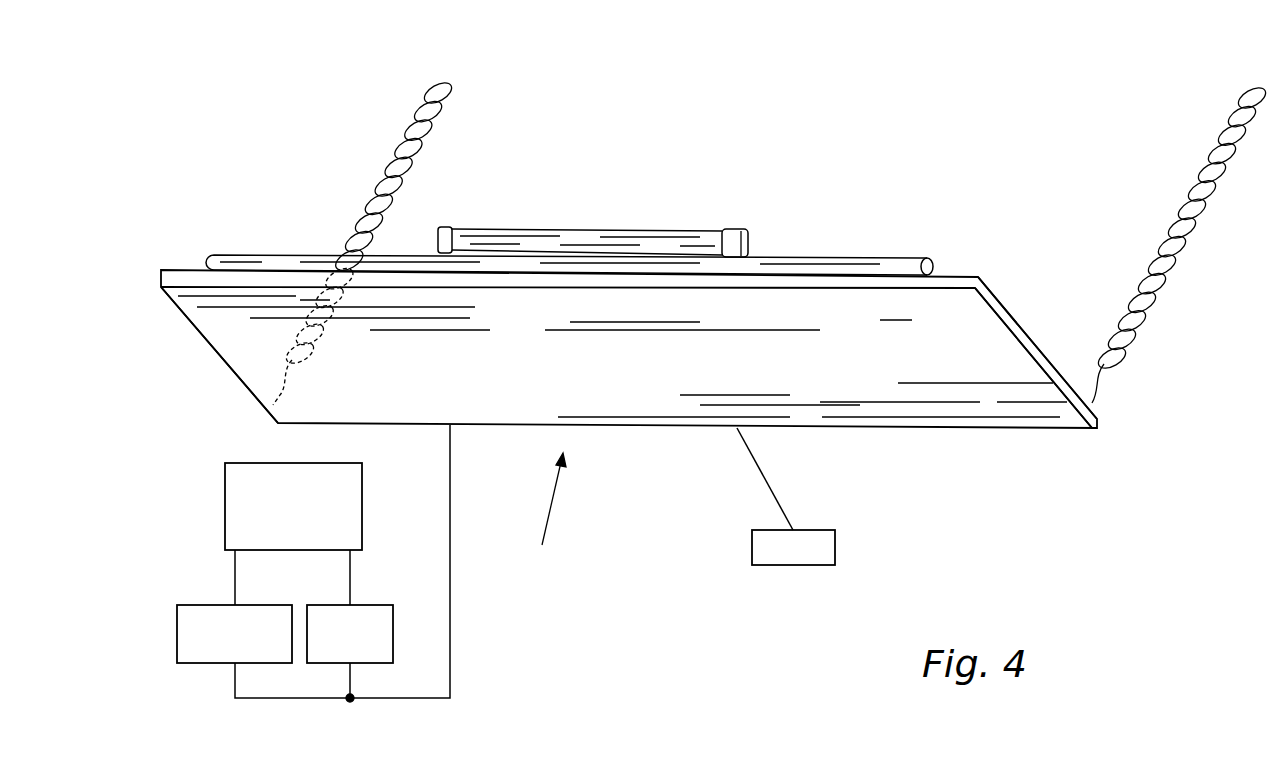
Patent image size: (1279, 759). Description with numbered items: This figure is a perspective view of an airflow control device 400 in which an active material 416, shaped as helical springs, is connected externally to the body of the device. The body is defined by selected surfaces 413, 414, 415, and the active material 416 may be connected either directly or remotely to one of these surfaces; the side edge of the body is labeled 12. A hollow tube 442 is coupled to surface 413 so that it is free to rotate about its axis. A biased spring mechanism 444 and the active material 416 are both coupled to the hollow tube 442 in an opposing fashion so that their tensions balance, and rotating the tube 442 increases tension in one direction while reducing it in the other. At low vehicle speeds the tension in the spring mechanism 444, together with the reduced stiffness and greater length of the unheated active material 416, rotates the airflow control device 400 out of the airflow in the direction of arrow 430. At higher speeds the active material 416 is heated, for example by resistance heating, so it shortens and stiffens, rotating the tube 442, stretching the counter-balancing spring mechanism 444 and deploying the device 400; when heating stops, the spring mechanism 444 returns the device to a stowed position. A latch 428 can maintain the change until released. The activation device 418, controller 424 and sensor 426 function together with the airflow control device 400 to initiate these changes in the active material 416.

The airflow control device 400 is at (1018, 114).
The hatch panel side edge 12 is at (223, 363).
The surface 413 is at (1003, 300).
The surface 414 is at (1057, 367).
The surface 415 is at (606, 407).
The active material 416 is at (392, 140).
The activation device 418 is at (210, 605).
The controller 424 is at (225, 495).
The sensor 426 is at (372, 605).
The latch 428 is at (785, 565).
The arrow 430 is at (553, 500).
The hollow tube 442 is at (837, 258).
The spring mechanism 444 is at (597, 237).